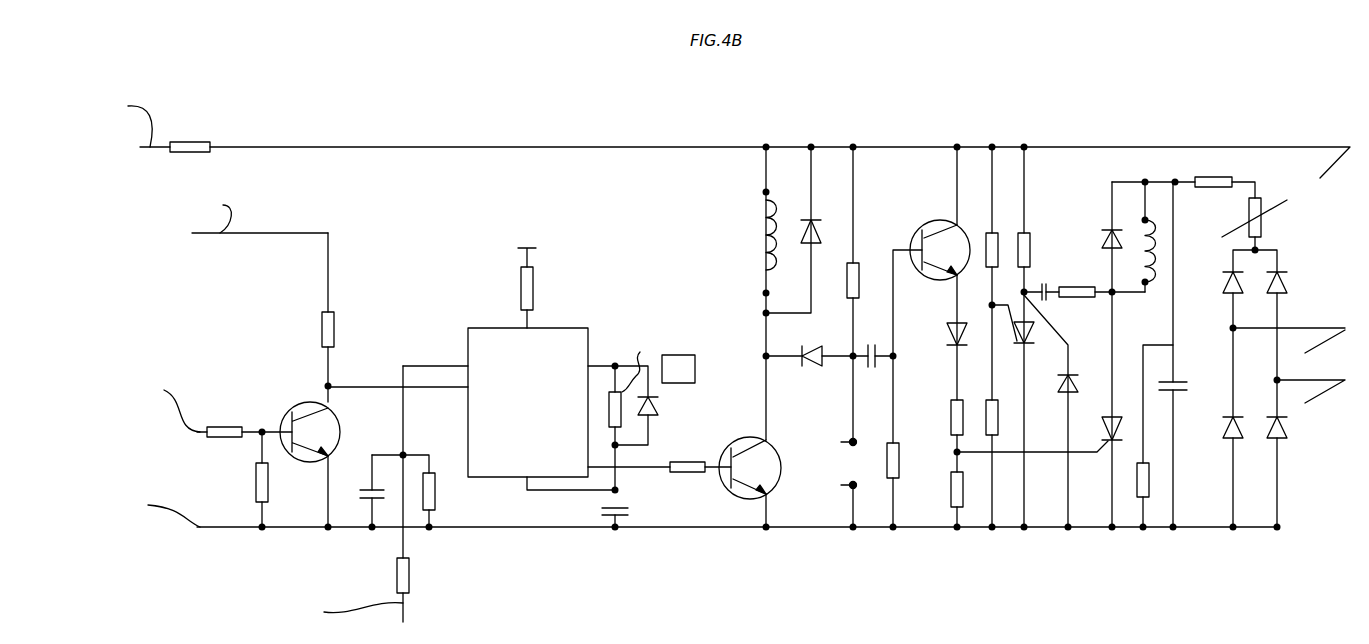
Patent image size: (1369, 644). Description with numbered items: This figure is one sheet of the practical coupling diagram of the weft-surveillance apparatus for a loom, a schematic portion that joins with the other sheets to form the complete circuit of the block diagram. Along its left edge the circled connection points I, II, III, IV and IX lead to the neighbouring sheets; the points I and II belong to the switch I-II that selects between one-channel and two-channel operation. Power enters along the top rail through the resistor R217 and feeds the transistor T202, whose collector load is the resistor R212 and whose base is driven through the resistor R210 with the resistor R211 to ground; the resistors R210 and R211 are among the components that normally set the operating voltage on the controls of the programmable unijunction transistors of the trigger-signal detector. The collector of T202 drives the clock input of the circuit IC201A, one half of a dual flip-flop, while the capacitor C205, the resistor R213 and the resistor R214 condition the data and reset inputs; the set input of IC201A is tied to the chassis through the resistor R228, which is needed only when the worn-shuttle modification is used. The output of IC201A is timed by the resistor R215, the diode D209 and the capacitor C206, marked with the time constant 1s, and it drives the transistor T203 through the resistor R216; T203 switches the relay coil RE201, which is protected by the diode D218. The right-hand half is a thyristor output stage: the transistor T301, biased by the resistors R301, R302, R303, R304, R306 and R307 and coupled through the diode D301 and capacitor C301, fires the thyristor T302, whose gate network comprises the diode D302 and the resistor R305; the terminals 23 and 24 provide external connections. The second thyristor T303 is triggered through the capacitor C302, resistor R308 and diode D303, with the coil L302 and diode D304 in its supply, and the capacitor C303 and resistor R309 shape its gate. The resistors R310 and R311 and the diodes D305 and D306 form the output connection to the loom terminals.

The switch I-II terminal I is at (125, 117).
The switch I-II terminal II is at (212, 210).
The terminal III is at (165, 400).
The terminal IV is at (156, 505).
The terminal IX is at (345, 612).
The terminal 23 is at (834, 442).
The terminal 24 is at (834, 485).
The resistor 180 ohm 4W R217 is at (193, 145).
The resistor 10k R212 is at (351, 328).
The resistor R210 is at (219, 432).
The resistor R211 is at (248, 482).
The transistor BC238B T202 is at (333, 432).
The capacitor 1.5uF C205 is at (373, 492).
The resistor 680k R213 is at (452, 492).
The resistor 100k R214 is at (426, 578).
The circuit IC201A is at (465, 404).
The resistor R228 is at (551, 289).
The resistor 120k R215 is at (617, 376).
The diode D209 is at (671, 409).
The time constant label 1s is at (658, 372).
The resistor 6.8k R216 is at (683, 465).
The transistor BC237 T203 is at (750, 455).
The capacitor 10uF C206 is at (612, 515).
The relay coil RE201 is at (731, 235).
The diode IN4004 D218 is at (836, 220).
The resistor 10k R301 is at (850, 284).
The transistor BC237 T301 is at (940, 231).
The resistor 22k R306 is at (991, 255).
The resistor 180k R307 is at (1045, 251).
The diode IN4148 D301 is at (798, 355).
The capacitor 0.047uF C301 is at (880, 355).
The diode IN4148 D302 is at (953, 343).
The resistor 330k R304 is at (931, 415).
The resistor 100k R302 is at (889, 459).
The resistor 1k R303 is at (930, 486).
The thyristor 2N6021 T302 is at (1024, 353).
The resistor 4.7k R305 is at (1014, 417).
The diode IN4004 D304 is at (1096, 236).
The capacitor 0.68uF C302 is at (1052, 318).
The resistor 10k R308 is at (1093, 304).
The relay coil L302 is at (1150, 251).
The diode IN4148 D303 is at (1093, 369).
The thyristor 2N4442 T303 is at (1076, 438).
The capacitor 6.25uF C303 is at (1180, 385).
The resistor 100k R309 is at (1154, 493).
The resistor 150 ohm 4W R310 is at (1215, 183).
The variable resistor R311 is at (1265, 217).
The diode IN4004 D305 is at (1252, 355).
The diode IN4004 D306 is at (1288, 369).